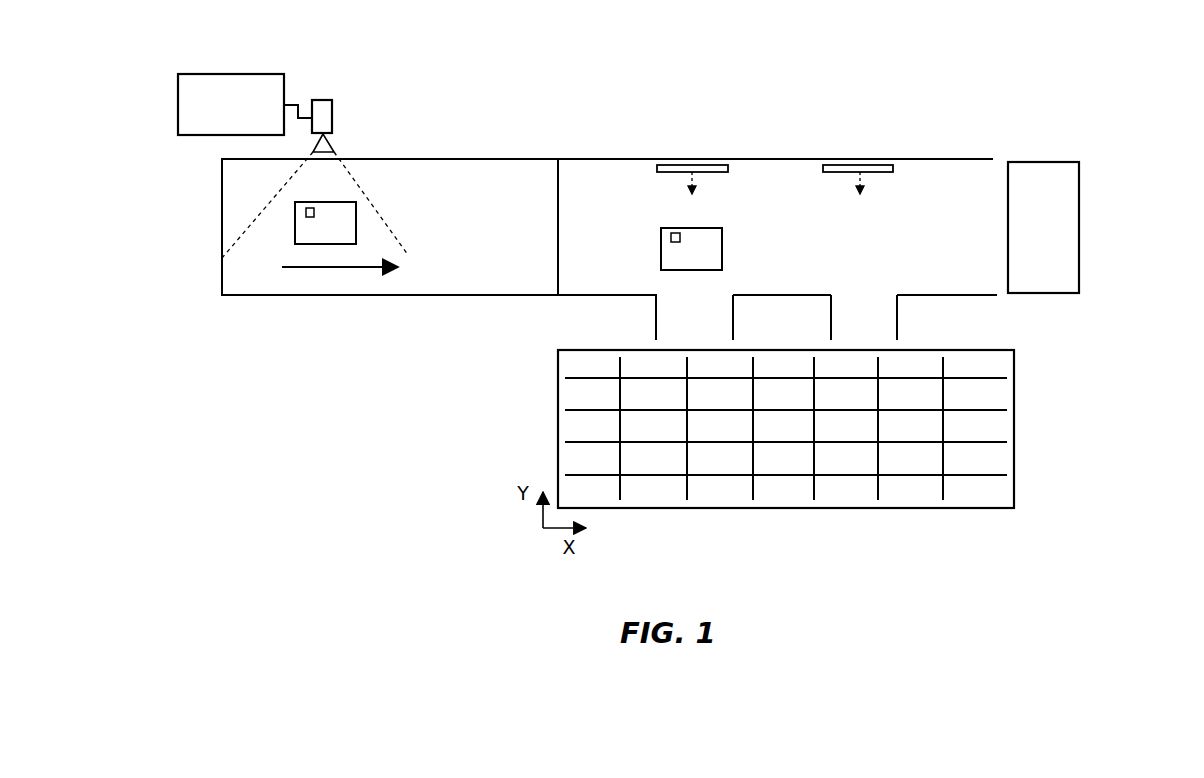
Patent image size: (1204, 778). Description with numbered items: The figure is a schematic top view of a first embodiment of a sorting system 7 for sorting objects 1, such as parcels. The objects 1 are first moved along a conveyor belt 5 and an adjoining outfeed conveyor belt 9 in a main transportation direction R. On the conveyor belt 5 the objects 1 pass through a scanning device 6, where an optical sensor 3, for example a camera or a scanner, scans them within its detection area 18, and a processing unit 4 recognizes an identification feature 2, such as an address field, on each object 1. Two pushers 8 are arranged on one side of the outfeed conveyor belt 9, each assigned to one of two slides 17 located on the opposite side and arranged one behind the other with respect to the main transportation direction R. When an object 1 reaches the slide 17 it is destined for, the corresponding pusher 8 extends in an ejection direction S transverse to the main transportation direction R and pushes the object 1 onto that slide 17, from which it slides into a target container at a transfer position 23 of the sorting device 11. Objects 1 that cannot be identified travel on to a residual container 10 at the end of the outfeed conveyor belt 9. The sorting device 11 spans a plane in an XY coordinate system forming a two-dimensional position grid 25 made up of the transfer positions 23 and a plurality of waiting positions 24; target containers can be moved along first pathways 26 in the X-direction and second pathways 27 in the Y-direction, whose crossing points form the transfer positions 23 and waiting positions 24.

The object 1 is at (347, 217).
The identification feature 2 is at (304, 214).
The optical sensor 3 is at (334, 117).
The processing unit 4 is at (245, 93).
The conveyor belt 5 is at (448, 177).
The scanning device 6 is at (393, 112).
The sorting system 7 is at (875, 124).
The pusher 8 is at (728, 168).
The outfeed conveyor belt 9 is at (905, 205).
The residual container 10 is at (1074, 203).
The sorting device 11 is at (1015, 378).
The slide 17 is at (675, 314).
The detection area 18 is at (288, 182).
The transfer position 23 is at (677, 378).
The waiting position 24 is at (620, 443).
The position grid 25 is at (993, 455).
The first pathway 26 is at (780, 443).
The second pathway 27 is at (943, 488).
The main transportation direction R is at (340, 280).
The ejection direction S is at (704, 180).